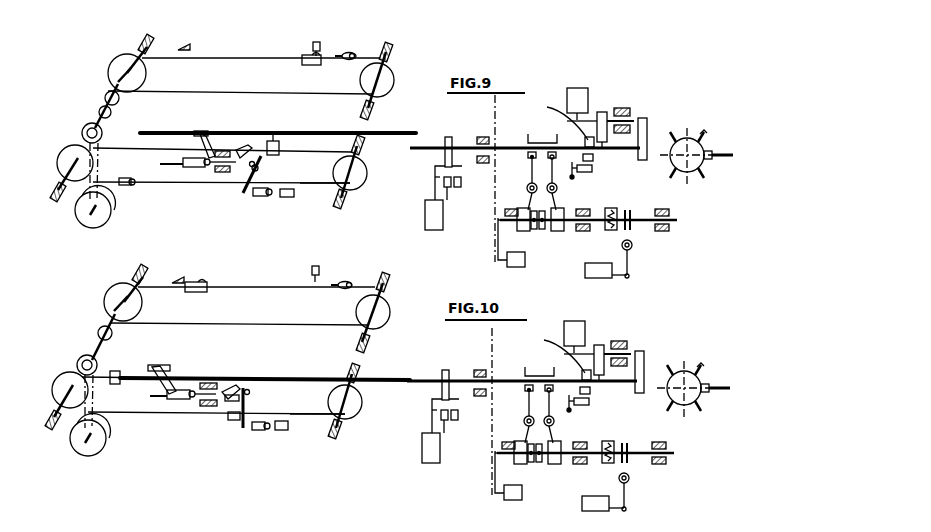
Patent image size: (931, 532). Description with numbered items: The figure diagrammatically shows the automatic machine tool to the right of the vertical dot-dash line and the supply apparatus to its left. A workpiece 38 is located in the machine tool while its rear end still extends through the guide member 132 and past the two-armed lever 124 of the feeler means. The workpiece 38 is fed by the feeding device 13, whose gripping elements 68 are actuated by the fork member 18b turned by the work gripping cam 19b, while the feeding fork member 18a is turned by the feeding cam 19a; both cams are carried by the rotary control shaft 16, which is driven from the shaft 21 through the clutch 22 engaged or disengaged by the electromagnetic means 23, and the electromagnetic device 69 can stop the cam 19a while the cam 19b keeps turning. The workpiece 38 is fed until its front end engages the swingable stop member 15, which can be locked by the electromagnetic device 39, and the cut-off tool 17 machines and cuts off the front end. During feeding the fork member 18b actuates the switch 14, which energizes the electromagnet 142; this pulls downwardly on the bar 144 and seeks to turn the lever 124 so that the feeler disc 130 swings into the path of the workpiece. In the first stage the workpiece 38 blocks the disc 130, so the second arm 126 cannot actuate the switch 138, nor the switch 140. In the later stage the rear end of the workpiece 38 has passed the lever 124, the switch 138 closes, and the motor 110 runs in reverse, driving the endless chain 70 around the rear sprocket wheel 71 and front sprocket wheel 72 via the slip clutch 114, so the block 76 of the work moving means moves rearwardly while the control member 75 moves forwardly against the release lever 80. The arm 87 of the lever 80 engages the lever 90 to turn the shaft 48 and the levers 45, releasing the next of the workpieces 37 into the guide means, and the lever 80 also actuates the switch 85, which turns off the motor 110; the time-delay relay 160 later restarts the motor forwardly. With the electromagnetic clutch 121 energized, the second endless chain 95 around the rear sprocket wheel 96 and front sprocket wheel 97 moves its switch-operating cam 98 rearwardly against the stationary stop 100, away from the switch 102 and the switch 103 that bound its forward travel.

In FIG. 9, the workpiece feeding device 13 is at (538, 134).
In FIG. 10, the workpiece feeding device 13 is at (539, 359).
In FIG. 9, the switch 14 is at (592, 168).
In FIG. 10, the switch 14 is at (590, 403).
In FIG. 9, the stop member 15 is at (645, 128).
In FIG. 10, the stop member 15 is at (648, 364).
In FIG. 9, the rotary control shaft 16 is at (567, 229).
In FIG. 10, the rotary control shaft 16 is at (585, 469).
In FIG. 9, the cut-off tool 17 is at (597, 130).
In FIG. 10, the cut-off tool 17 is at (587, 363).
In FIG. 9, the feeding fork member 18a is at (528, 178).
In FIG. 10, the feeding fork member 18a is at (509, 417).
In FIG. 9, the fork member 18b is at (555, 183).
In FIG. 10, the fork member 18b is at (561, 417).
In FIG. 9, the feeding cam 19a is at (523, 232).
In FIG. 10, the feeding cam 19a is at (509, 462).
In FIG. 9, the work gripping cam 19b is at (557, 232).
In FIG. 10, the work gripping cam 19b is at (545, 462).
In FIG. 9, the shaft 21 is at (634, 212).
In FIG. 10, the shaft 21 is at (634, 440).
In FIG. 9, the clutch 22 is at (610, 208).
In FIG. 10, the clutch 22 is at (606, 440).
In FIG. 9, the electromagnetic means 23 is at (585, 270).
In FIG. 10, the electromagnetic means 23 is at (589, 492).
In FIG. 9, the workpieces 37 is at (303, 131).
In FIG. 10, the workpieces 37 is at (298, 378).
In FIG. 9, the workpiece 38 is at (515, 146).
In FIG. 10, the workpiece 38 is at (522, 362).
In FIG. 9, the electromagnetic device 39 is at (567, 96).
In FIG. 10, the electromagnetic device 39 is at (567, 333).
In FIG. 9, the lever 45 is at (168, 157).
In FIG. 10, the lever 45 is at (165, 389).
In FIG. 9, the shaft 48 is at (163, 168).
In FIG. 10, the shaft 48 is at (163, 400).
In FIG. 9, the gripping elements 68 is at (556, 117).
In FIG. 10, the gripping elements 68 is at (553, 350).
In FIG. 9, the electromagnetic device 69 is at (525, 260).
In FIG. 10, the electromagnetic device 69 is at (519, 481).
In FIG. 9, the endless chain 70 is at (308, 184).
In FIG. 10, the endless chain 70 is at (299, 414).
In FIG. 9, the rear sprocket wheel 71 is at (70, 158).
In FIG. 10, the rear sprocket wheel 71 is at (66, 384).
In FIG. 9, the front sprocket wheel 72 is at (366, 174).
In FIG. 10, the front sprocket wheel 72 is at (360, 400).
In FIG. 9, the control member 75 is at (130, 186).
In FIG. 10, the control member 75 is at (234, 421).
In FIG. 9, the block 76 is at (273, 141).
In FIG. 10, the block 76 is at (120, 364).
In FIG. 9, the release lever 80 is at (254, 166).
In FIG. 10, the release lever 80 is at (250, 394).
In FIG. 9, the switch 85 is at (260, 197).
In FIG. 10, the switch 85 is at (258, 431).
In FIG. 9, the arm 87 is at (241, 148).
In FIG. 10, the arm 87 is at (234, 386).
In FIG. 9, the lever 90 is at (240, 182).
In FIG. 10, the lever 90 is at (232, 403).
In FIG. 9, the second endless chain 95 is at (253, 58).
In FIG. 10, the second endless chain 95 is at (255, 287).
In FIG. 9, the rear sprocket wheel 96 is at (121, 66).
In FIG. 10, the rear sprocket wheel 96 is at (117, 293).
In FIG. 9, the front sprocket wheel 97 is at (385, 72).
In FIG. 10, the front sprocket wheel 97 is at (381, 312).
In FIG. 9, the switch-operating cam 98 is at (316, 65).
In FIG. 10, the switch-operating cam 98 is at (206, 282).
In FIG. 9, the stationary stop 100 is at (190, 48).
In FIG. 10, the stationary stop 100 is at (182, 279).
In FIG. 9, the switch 102 is at (313, 46).
In FIG. 10, the switch 102 is at (312, 270).
In FIG. 9, the switch 103 is at (349, 53).
In FIG. 10, the switch 103 is at (345, 281).
In FIG. 9, the motor 110 is at (106, 217).
In FIG. 10, the motor 110 is at (100, 450).
In FIG. 9, the slip clutch 114 is at (85, 132).
In FIG. 10, the slip clutch 114 is at (78, 366).
In FIG. 9, the electromagnetic clutch 121 is at (105, 96).
In FIG. 10, the electromagnetic clutch 121 is at (99, 328).
In FIG. 9, the two-armed lever 124 is at (437, 143).
In FIG. 10, the two-armed lever 124 is at (417, 364).
In FIG. 9, the second arm 126 is at (440, 166).
In FIG. 10, the second arm 126 is at (430, 412).
In FIG. 9, the feeler disc 130 is at (448, 136).
In FIG. 10, the feeler disc 130 is at (444, 370).
In FIG. 9, the guide member 132 is at (481, 136).
In FIG. 10, the guide member 132 is at (475, 368).
In FIG. 9, the switch 138 is at (448, 194).
In FIG. 10, the switch 138 is at (459, 432).
In FIG. 9, the switch 140 is at (461, 181).
In FIG. 10, the switch 140 is at (466, 413).
In FIG. 9, the electromagnet 142 is at (443, 220).
In FIG. 10, the electromagnet 142 is at (449, 448).
In FIG. 9, the bar 144 is at (435, 194).
In FIG. 10, the bar 144 is at (419, 419).
In FIG. 9, the time-delay relay 160 is at (288, 198).
In FIG. 10, the time-delay relay 160 is at (281, 431).